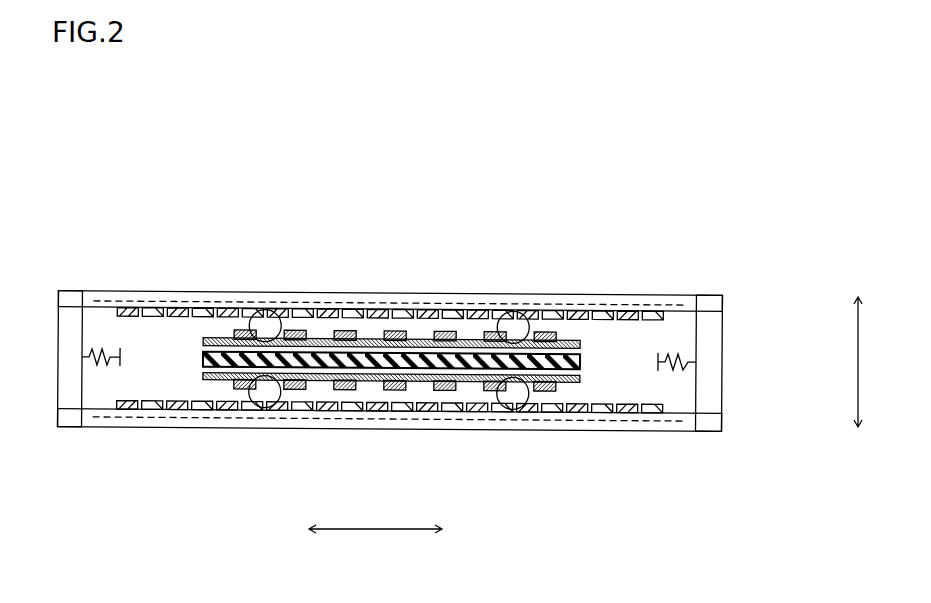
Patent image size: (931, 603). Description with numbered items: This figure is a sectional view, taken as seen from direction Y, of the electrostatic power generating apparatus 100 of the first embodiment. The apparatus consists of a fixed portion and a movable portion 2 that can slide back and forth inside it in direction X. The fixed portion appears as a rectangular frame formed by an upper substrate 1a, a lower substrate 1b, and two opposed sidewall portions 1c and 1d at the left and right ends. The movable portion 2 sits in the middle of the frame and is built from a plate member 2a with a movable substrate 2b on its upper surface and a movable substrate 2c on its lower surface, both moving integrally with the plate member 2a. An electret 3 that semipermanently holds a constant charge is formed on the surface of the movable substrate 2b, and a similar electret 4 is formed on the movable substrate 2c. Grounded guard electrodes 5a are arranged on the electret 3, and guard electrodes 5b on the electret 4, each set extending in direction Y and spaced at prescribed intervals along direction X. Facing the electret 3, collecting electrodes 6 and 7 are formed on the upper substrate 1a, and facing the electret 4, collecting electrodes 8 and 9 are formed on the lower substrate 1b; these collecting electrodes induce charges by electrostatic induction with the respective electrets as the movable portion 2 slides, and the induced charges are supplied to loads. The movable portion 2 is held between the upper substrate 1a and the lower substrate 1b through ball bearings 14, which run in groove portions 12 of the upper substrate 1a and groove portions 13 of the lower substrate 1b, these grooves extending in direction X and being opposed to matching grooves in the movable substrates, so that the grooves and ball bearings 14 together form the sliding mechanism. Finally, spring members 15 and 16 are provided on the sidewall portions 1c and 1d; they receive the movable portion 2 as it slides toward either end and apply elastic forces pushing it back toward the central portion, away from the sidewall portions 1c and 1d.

The power generating apparatus 100 is at (795, 200).
The upper substrate 1a is at (702, 300).
The lower substrate 1b is at (708, 430).
The sidewall portion 1c is at (68, 331).
The sidewall portion 1d is at (722, 341).
The movable portion 2 is at (425, 363).
The plate member 2a is at (580, 360).
The movable substrate 2b is at (580, 343).
The movable substrate 2c is at (407, 380).
The electret 3 is at (408, 300).
The electret 4 is at (407, 422).
The guard electrodes 5a is at (551, 331).
The guard electrodes 5b is at (548, 390).
The collecting electrode 6 is at (180, 308).
The collecting electrode 7 is at (207, 308).
The collecting electrode 8 is at (180, 413).
The collecting electrode 9 is at (205, 413).
The groove portions 12 is at (347, 300).
The groove portions 13 is at (633, 421).
The ball bearings 14 is at (514, 409).
The spring member 15 is at (106, 364).
The spring member 16 is at (681, 370).